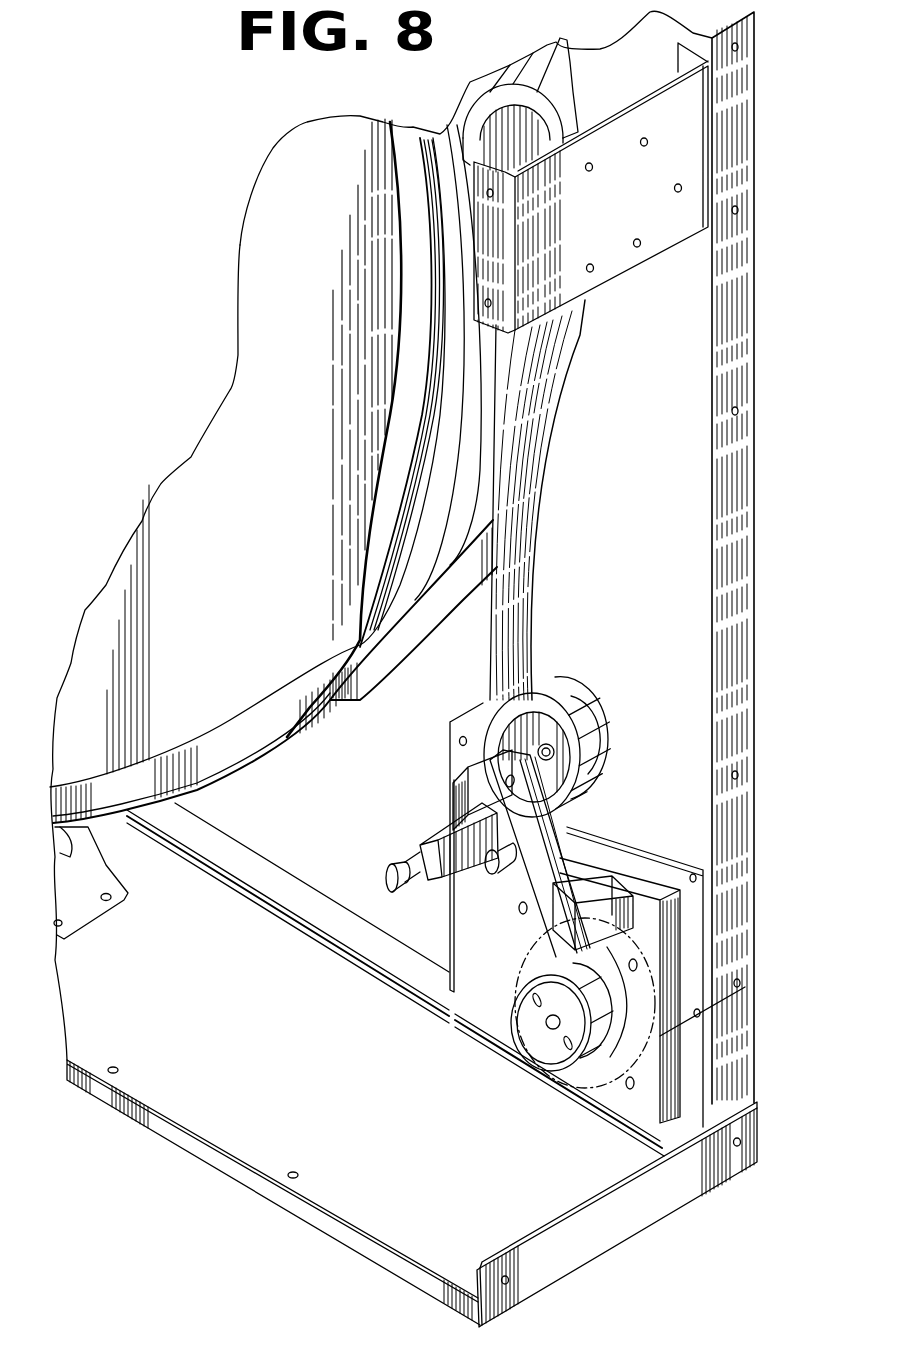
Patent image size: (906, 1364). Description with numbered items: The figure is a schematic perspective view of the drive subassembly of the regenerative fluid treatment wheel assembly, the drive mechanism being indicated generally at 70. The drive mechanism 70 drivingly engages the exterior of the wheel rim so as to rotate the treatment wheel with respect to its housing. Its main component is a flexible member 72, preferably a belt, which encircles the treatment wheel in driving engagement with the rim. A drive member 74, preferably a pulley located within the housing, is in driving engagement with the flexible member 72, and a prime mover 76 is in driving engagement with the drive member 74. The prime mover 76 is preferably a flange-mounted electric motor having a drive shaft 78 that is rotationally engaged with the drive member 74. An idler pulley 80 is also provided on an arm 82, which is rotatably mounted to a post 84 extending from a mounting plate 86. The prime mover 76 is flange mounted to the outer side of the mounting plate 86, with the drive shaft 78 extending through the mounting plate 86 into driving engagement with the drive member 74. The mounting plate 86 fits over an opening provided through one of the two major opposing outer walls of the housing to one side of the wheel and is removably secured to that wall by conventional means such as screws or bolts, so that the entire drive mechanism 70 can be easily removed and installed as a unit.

The drive mechanism 70 is at (397, 851).
The flexible member 72 is at (519, 593).
The drive member 74 is at (556, 1054).
The prime mover 76 is at (718, 886).
The drive shaft 78 is at (549, 1018).
The idler pulley 80 is at (579, 705).
The arm 82 is at (565, 857).
The post 84 is at (628, 882).
The mounting plate 86 is at (449, 960).